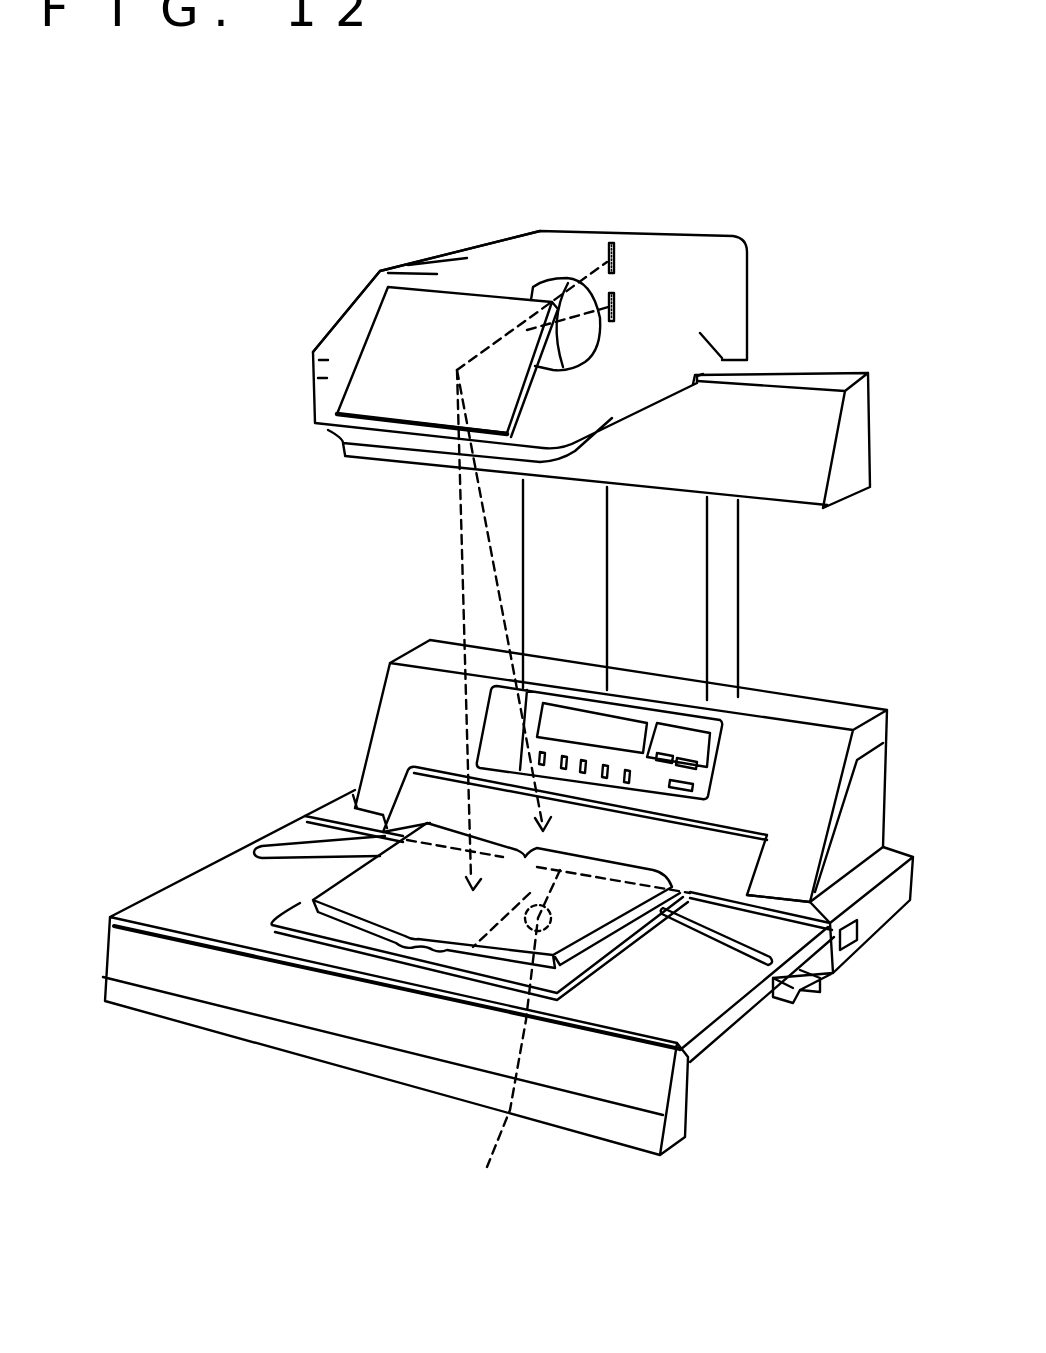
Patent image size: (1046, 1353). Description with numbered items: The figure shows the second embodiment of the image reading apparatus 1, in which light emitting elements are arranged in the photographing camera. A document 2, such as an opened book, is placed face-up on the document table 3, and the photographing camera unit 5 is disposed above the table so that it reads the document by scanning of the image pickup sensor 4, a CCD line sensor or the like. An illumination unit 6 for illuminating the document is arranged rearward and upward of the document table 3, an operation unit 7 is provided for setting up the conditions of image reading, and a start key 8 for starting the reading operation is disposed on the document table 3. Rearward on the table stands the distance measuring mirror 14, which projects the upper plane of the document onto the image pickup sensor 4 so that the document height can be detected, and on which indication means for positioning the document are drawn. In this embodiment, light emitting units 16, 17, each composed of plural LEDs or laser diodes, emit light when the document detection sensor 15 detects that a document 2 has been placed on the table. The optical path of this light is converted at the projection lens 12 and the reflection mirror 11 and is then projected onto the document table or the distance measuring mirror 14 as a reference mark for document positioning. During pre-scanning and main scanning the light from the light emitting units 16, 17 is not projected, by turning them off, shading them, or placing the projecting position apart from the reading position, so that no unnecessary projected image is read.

The image reading apparatus 1 is at (327, 162).
The document 2 is at (305, 895).
The document table 3 is at (713, 1003).
The image pickup sensor 4 is at (640, 240).
The photographing camera unit 5 is at (350, 312).
The illumination unit 6 is at (870, 373).
The operation unit 7 is at (745, 690).
The start key 8 is at (258, 845).
The reflection mirror 11 is at (355, 410).
The projection lens 12 is at (567, 280).
The distance measuring mirror 14 is at (410, 793).
The document detection sensor 15 is at (548, 794).
The light emitting unit 16 is at (607, 238).
The light emitting unit 17 is at (607, 305).